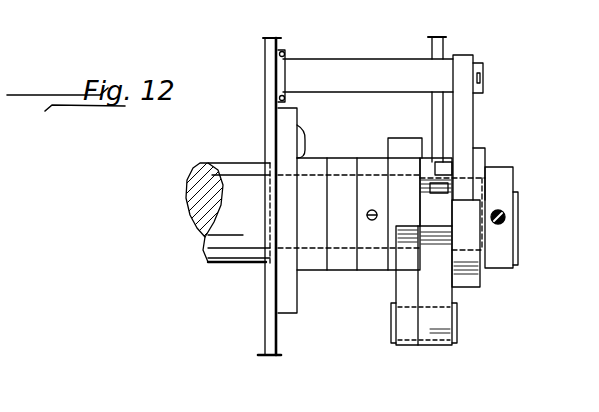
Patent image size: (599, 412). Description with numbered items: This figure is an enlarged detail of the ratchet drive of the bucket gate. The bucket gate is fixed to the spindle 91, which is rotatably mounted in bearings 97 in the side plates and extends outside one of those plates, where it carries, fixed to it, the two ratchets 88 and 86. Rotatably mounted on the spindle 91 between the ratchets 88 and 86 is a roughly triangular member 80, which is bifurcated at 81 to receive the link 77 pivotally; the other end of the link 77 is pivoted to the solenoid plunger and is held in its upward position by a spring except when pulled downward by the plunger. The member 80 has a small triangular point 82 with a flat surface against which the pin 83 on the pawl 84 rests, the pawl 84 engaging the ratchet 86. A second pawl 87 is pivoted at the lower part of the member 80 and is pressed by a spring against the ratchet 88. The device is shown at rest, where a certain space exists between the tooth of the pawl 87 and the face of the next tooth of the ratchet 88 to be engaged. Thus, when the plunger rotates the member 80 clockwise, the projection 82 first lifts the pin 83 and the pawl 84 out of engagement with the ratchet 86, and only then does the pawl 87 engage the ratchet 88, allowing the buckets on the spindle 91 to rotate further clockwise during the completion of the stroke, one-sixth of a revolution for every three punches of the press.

The link 77 is at (441, 48).
The roughly triangular member 80 is at (447, 292).
The bifurcated point 81 is at (428, 152).
The triangular point 82 is at (478, 170).
The pin 83 is at (452, 175).
The pawl 84 is at (468, 122).
The ratchet 86 is at (492, 168).
The second pawl 87 is at (400, 280).
The ratchet 88 is at (393, 260).
The spindle 91 is at (214, 242).
The bearings 97 is at (305, 158).